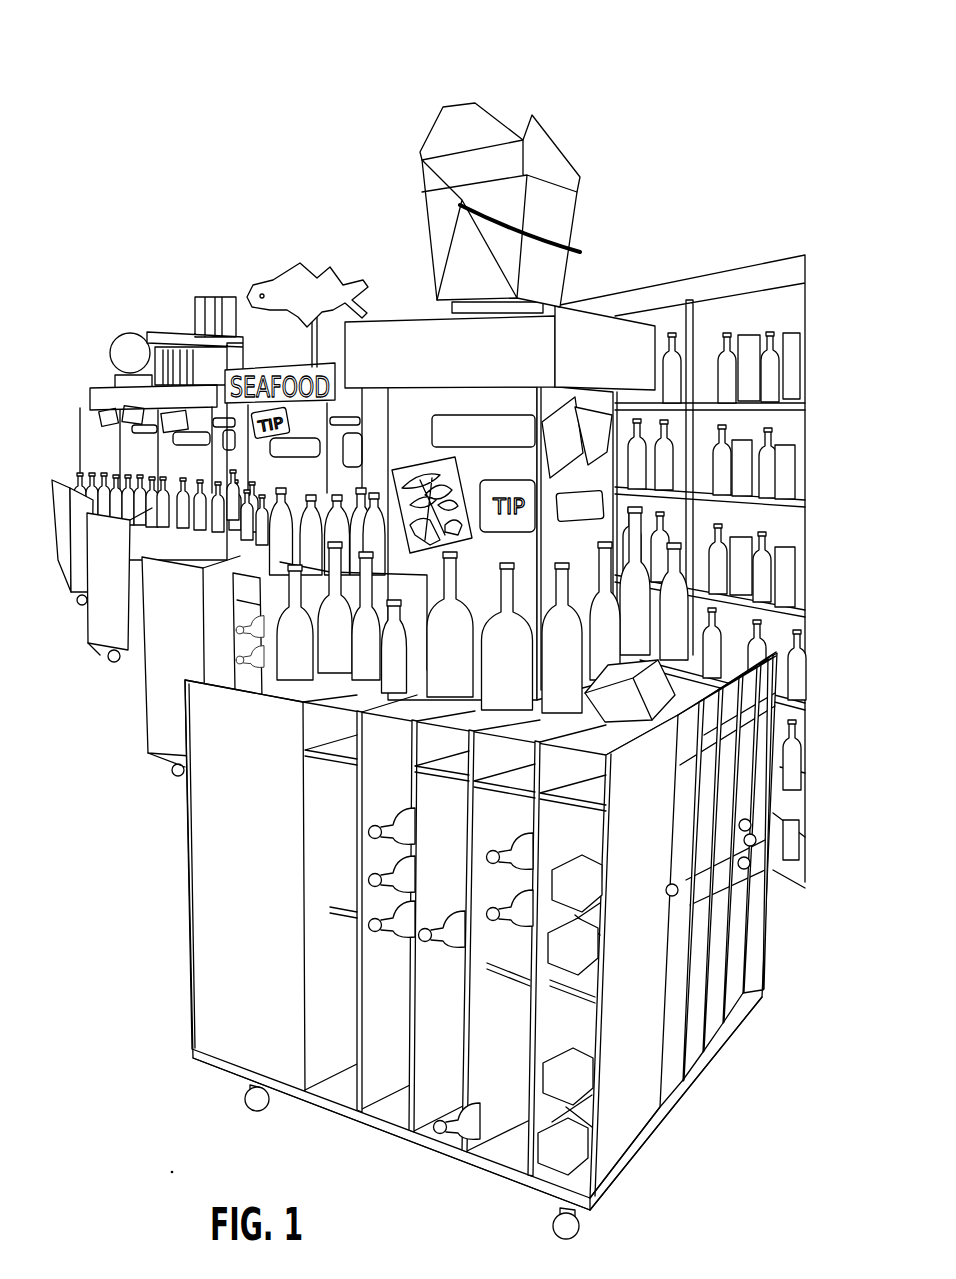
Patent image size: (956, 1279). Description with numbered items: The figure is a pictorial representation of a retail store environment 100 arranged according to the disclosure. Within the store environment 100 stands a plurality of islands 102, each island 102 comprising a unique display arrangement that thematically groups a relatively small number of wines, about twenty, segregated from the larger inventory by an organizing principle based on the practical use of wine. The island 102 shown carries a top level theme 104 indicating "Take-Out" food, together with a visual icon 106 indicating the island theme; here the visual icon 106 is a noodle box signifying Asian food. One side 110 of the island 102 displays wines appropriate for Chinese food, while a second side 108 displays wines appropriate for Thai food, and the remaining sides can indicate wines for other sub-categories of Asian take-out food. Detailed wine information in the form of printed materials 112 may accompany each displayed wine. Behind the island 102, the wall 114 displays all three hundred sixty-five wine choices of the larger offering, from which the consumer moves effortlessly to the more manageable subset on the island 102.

The retail store environment 100 is at (714, 61).
The island 102 is at (340, 735).
The top level theme 104 is at (415, 315).
The visual icon 106 is at (462, 100).
The second side 108 is at (595, 520).
The one side 110 is at (480, 414).
The printed materials 112 is at (383, 793).
The wall 114 is at (735, 290).